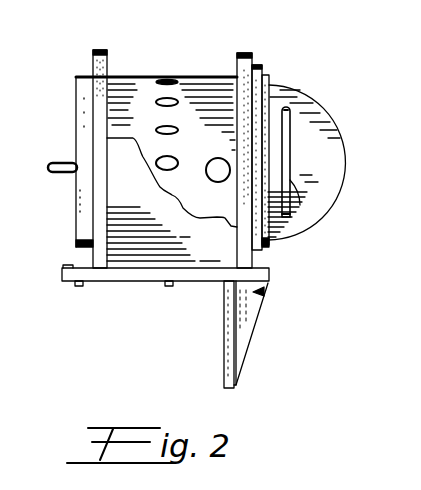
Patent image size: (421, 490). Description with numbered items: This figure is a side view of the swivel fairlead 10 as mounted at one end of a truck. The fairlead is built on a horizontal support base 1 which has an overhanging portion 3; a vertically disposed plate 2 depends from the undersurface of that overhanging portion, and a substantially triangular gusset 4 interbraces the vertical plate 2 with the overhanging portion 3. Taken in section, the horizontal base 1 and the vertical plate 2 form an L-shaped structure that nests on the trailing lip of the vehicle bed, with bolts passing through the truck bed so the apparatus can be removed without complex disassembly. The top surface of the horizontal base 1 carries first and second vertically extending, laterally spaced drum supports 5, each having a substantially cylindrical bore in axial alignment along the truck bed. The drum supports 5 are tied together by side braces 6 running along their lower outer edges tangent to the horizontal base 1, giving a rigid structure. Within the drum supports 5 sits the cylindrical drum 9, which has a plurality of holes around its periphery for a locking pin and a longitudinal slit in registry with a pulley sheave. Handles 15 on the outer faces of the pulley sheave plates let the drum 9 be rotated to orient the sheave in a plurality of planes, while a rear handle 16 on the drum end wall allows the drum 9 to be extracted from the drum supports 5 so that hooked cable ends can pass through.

The horizontal support base 1 is at (62, 272).
The vertically disposed plate 2 is at (227, 345).
The overhanging portion 3 is at (264, 292).
The gusset 4 is at (248, 315).
The drum supports 5 is at (237, 65).
The side braces 6 is at (117, 198).
The drum 9 is at (140, 116).
The swivel fairlead 10 is at (129, 312).
The handles 15 is at (290, 173).
The rear handle 16 is at (57, 173).